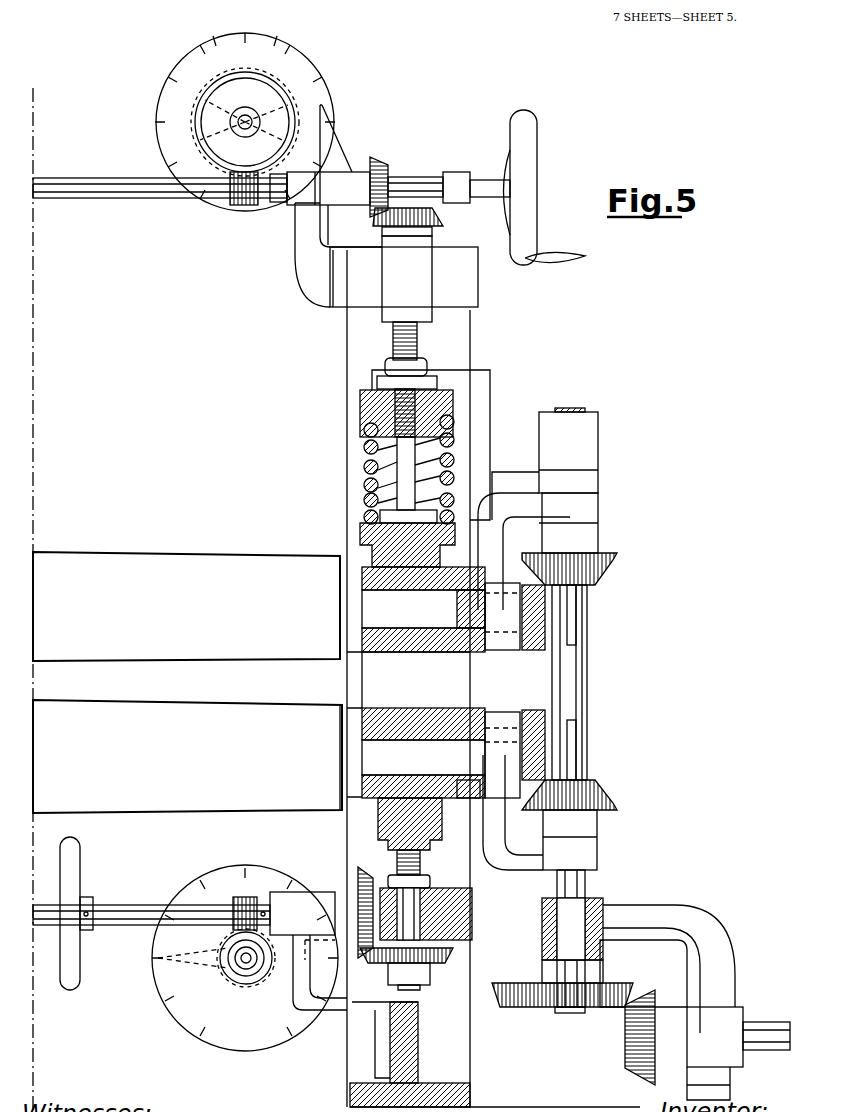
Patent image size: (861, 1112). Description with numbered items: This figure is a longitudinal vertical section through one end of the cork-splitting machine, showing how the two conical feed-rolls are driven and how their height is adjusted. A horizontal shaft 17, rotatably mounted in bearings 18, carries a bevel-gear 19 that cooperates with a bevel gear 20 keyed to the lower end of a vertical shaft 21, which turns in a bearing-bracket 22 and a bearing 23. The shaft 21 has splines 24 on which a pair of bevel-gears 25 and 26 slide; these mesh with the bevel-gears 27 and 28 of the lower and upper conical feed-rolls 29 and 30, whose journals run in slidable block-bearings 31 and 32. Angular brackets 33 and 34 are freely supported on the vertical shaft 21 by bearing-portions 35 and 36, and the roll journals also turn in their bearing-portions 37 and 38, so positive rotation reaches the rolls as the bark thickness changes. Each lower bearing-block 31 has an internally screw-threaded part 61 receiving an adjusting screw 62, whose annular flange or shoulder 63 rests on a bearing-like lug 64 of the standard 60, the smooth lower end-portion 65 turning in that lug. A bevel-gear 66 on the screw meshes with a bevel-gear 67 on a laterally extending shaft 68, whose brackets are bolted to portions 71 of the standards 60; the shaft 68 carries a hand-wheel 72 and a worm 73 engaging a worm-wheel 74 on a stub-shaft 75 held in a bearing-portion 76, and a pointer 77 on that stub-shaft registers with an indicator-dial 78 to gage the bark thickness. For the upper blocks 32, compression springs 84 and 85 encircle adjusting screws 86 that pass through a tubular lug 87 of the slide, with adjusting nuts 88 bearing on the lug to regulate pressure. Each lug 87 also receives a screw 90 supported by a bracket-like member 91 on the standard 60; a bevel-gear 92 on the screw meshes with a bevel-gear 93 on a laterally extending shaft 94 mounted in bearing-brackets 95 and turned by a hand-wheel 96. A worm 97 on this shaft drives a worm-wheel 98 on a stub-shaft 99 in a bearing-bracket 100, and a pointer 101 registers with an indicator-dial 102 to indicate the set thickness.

The horizontal shaft 17 is at (760, 1024).
The bearings 18 is at (705, 1010).
The bevel-gear 19 is at (630, 1050).
The bevel gear 20 is at (515, 1002).
The vertical shaft 21 is at (587, 682).
The bearing-bracket 22 is at (605, 906).
The bearing 23 is at (605, 432).
The splines 24 is at (573, 615).
The bevel-gear 25 is at (618, 800).
The bevel-gear 26 is at (618, 567).
The bevel-gear 27 is at (530, 712).
The bevel-gear 28 is at (530, 650).
The lower conical feed-roll 29 is at (245, 706).
The upper conical feed-roll 30 is at (240, 553).
The slidable block-bearing 31 is at (378, 820).
The slidable block-bearing 32 is at (362, 540).
The angular bracket 33 is at (500, 866).
The angular bracket 34 is at (500, 485).
The bearing-portion 35 is at (598, 840).
The bearing-portion 36 is at (578, 515).
The bearing-portion 37 is at (470, 722).
The bearing-portion 38 is at (460, 650).
The standard 60 is at (347, 410).
The internally screw-threaded part 61 is at (422, 862).
The adjusting screw 62 is at (386, 880).
The annular flange or shoulder 63 is at (430, 893).
The bearing-like member or lug 64 is at (455, 928).
The smooth lower end-portion 65 is at (440, 978).
The bevel-gear 66 is at (395, 945).
The bevel-gear 67 is at (365, 915).
The laterally extending shaft 68 is at (118, 928).
The portions of the standard 71 is at (505, 1060).
The hand-wheel 72 is at (78, 872).
The worm 73 is at (235, 905).
The worm-wheel 74 is at (226, 978).
The stub-shaft 75 is at (246, 964).
The bearing-portion 76 is at (298, 920).
The pointer 77 is at (195, 960).
The indicator-dial 78 is at (178, 1000).
The compression spring 84 is at (452, 460).
The compression spring 85 is at (452, 480).
The adjusting screw 86 is at (418, 345).
The lug or projection 87 is at (362, 432).
The adjusting nut 88 is at (430, 366).
The screw 90 is at (375, 365).
The bracket-like member 91 is at (395, 285).
The bevel-gear 92 is at (410, 208).
The bevel-gear 93 is at (380, 160).
The laterally extending shaft 94 is at (87, 176).
The bearing-bracket 95 is at (295, 270).
The hand-wheel 96 is at (532, 140).
The worm 97 is at (240, 206).
The worm-wheel 98 is at (290, 93).
The stub-shaft 99 is at (247, 120).
The bearing-bracket 100 is at (322, 112).
The pointer 101 is at (188, 88).
The indicator-dial 102 is at (190, 28).